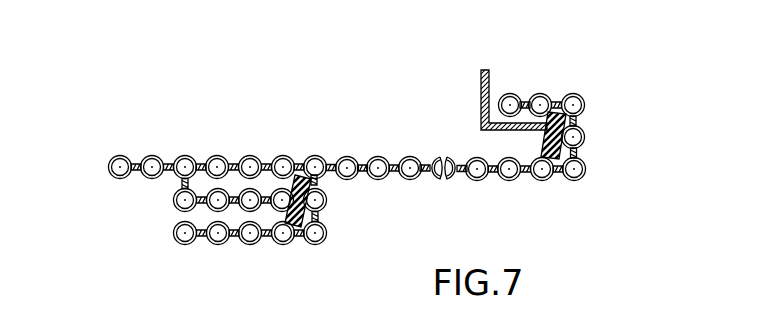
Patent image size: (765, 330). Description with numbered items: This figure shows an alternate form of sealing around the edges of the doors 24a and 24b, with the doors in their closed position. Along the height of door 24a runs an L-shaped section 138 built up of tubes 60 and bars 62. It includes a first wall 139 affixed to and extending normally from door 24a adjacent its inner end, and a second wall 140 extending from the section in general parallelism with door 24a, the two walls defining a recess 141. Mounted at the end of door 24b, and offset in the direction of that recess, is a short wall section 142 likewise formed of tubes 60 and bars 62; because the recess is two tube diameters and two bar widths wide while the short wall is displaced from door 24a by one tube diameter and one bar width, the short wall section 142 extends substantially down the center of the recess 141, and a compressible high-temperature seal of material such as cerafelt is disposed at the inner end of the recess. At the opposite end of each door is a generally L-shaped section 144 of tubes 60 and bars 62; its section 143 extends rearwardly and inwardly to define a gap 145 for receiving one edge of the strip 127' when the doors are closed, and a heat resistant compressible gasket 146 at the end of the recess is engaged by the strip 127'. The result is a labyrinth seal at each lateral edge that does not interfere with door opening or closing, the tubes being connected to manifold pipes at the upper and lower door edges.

The door 24a is at (324, 145).
The door 24b is at (152, 155).
The tubes 60 is at (238, 164).
The bars 62 is at (197, 213).
The strip 127' is at (486, 88).
The L-shaped section 138 is at (340, 209).
The first wall 139 is at (318, 185).
The second wall 140 is at (265, 246).
The recess 141 is at (253, 170).
The short wall section 142 is at (272, 175).
The section 143 is at (300, 234).
The L-shaped section 144 is at (578, 79).
The gap 145 is at (512, 140).
The gasket 146 is at (560, 177).